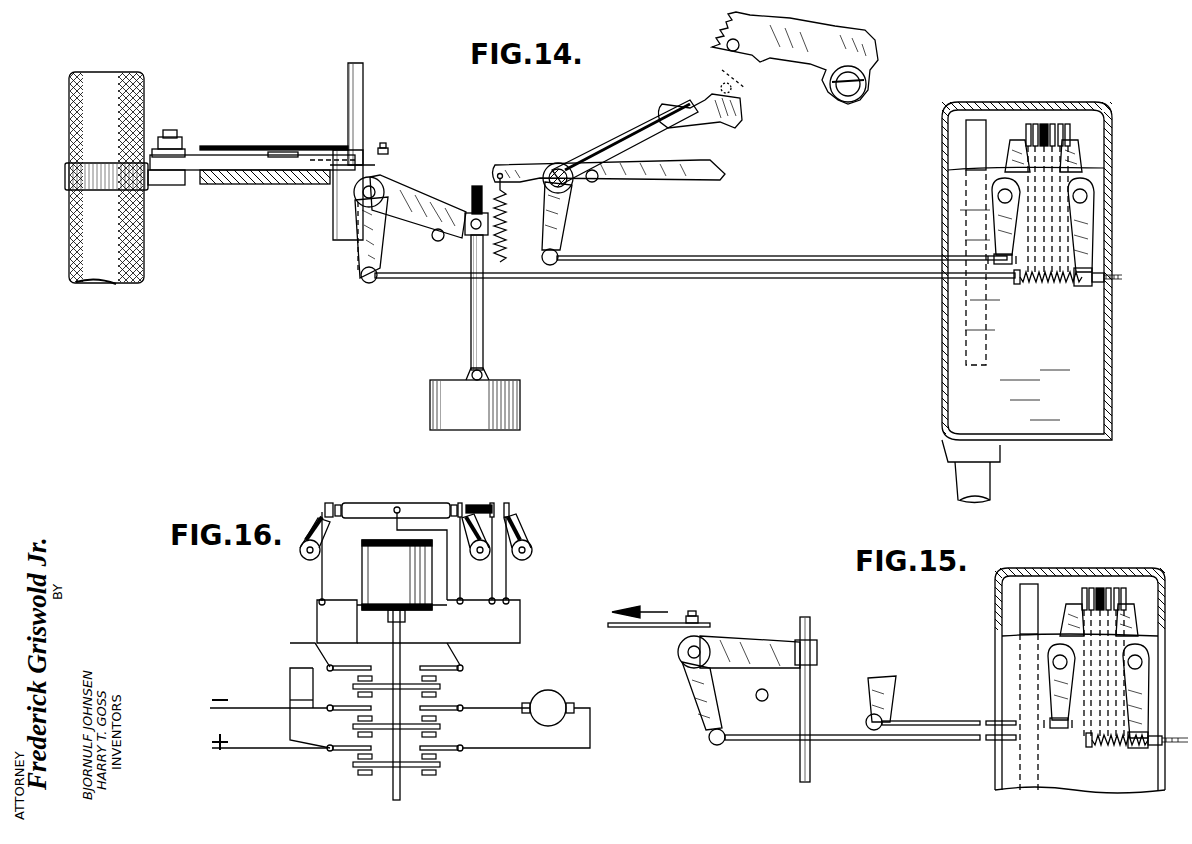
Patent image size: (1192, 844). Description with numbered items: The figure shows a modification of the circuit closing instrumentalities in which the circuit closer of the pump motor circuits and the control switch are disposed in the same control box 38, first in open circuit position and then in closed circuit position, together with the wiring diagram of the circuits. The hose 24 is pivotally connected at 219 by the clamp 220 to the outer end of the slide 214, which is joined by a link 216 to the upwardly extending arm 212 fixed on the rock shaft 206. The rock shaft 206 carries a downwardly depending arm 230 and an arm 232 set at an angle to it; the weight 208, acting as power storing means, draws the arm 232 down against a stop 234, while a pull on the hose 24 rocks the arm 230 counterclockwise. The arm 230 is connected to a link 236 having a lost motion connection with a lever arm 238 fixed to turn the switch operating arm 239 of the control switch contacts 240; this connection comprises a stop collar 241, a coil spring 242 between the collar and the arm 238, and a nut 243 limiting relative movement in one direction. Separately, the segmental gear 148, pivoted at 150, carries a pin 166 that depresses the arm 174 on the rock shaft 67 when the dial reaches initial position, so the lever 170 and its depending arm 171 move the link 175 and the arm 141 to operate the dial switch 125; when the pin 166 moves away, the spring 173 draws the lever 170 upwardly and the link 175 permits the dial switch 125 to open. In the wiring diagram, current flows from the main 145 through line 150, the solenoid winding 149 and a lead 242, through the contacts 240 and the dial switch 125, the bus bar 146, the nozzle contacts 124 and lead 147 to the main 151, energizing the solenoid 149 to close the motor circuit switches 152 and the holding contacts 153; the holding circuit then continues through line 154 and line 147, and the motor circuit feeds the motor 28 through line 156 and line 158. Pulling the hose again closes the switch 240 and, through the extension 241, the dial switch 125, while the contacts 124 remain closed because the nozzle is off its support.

In FIG. 14, the hose 24 is at (140, 197).
In FIG. 14, the clamp 220 is at (85, 177).
In FIG. 14, the pivotal connection 219 is at (170, 135).
In FIG. 14, the slide 214 is at (222, 158).
In FIG. 14, the link 216 is at (312, 152).
In FIG. 15, the link 216 is at (632, 630).
In FIG. 14, the upwardly extending arm 212 is at (401, 160).
In FIG. 14, the rock shaft 206 is at (363, 196).
In FIG. 15, the rock shaft 206 is at (688, 658).
In FIG. 14, the arm 232 is at (426, 176).
In FIG. 15, the arm 232 is at (754, 648).
In FIG. 14, the stop 234 is at (444, 238).
In FIG. 15, the stop 234 is at (766, 700).
In FIG. 14, the downwardly depending arm 230 is at (363, 242).
In FIG. 15, the downwardly depending arm 230 is at (706, 710).
In FIG. 14, the weight 208 is at (510, 405).
In FIG. 14, the spring 173 is at (508, 226).
In FIG. 14, the lever 170 is at (674, 180).
In FIG. 14, the downwardly depending arm 171 is at (560, 222).
In FIG. 15, the downwardly depending arm 171 is at (884, 702).
In FIG. 14, the link 175 is at (812, 250).
In FIG. 15, the link 175 is at (934, 712).
In FIG. 14, the link 236 is at (678, 282).
In FIG. 15, the link 236 is at (866, 742).
In FIG. 14, the rock shaft 67 is at (620, 138).
In FIG. 14, the arm 174 is at (722, 128).
In FIG. 14, the segmental gear 148 is at (772, 60).
In FIG. 14, the pivot 150 is at (850, 96).
In FIG. 16, the pivot 150 is at (280, 660).
In FIG. 14, the pin 166 is at (712, 70).
In FIG. 14, the control box 38 is at (942, 184).
In FIG. 15, the control box 38 is at (995, 664).
In FIG. 14, the nozzle contacts 124 is at (1032, 124).
In FIG. 16, the nozzle contacts 124 is at (460, 500).
In FIG. 15, the nozzle contacts 124 is at (1086, 588).
In FIG. 14, the stop collar 241 is at (1046, 124).
In FIG. 16, the stop collar 241 is at (480, 500).
In FIG. 15, the stop collar 241 is at (1100, 588).
In FIG. 14, the control switch contacts 240 is at (1064, 124).
In FIG. 16, the control switch contacts 240 is at (514, 506).
In FIG. 15, the control switch contacts 240 is at (1112, 592).
In FIG. 14, the switch operating arm 239 is at (1080, 160).
In FIG. 16, the switch operating arm 239 is at (520, 540).
In FIG. 15, the switch operating arm 239 is at (1130, 626).
In FIG. 14, the arm 141 is at (1000, 212).
In FIG. 15, the arm 141 is at (1056, 680).
In FIG. 14, the lever arm 238 is at (1085, 228).
In FIG. 15, the lever arm 238 is at (1140, 676).
In FIG. 14, the nut 243 is at (1095, 266).
In FIG. 15, the nut 243 is at (1160, 772).
In FIG. 14, the coil spring 242 is at (1056, 284).
In FIG. 16, the coil spring 242 is at (522, 622).
In FIG. 15, the coil spring 242 is at (1114, 748).
In FIG. 16, the bus bar 146 is at (366, 492).
In FIG. 16, the dial switch 125 is at (334, 496).
In FIG. 16, the solenoid 149 is at (382, 568).
In FIG. 16, the line 154 is at (450, 622).
In FIG. 16, the line 147 is at (316, 616).
In FIG. 16, the main 151 is at (262, 708).
In FIG. 16, the main 145 is at (254, 752).
In FIG. 16, the switches 152 is at (440, 716).
In FIG. 16, the contacts 153 is at (470, 674).
In FIG. 16, the line 158 is at (500, 704).
In FIG. 16, the motor 28 is at (556, 692).
In FIG. 16, the line 156 is at (510, 752).